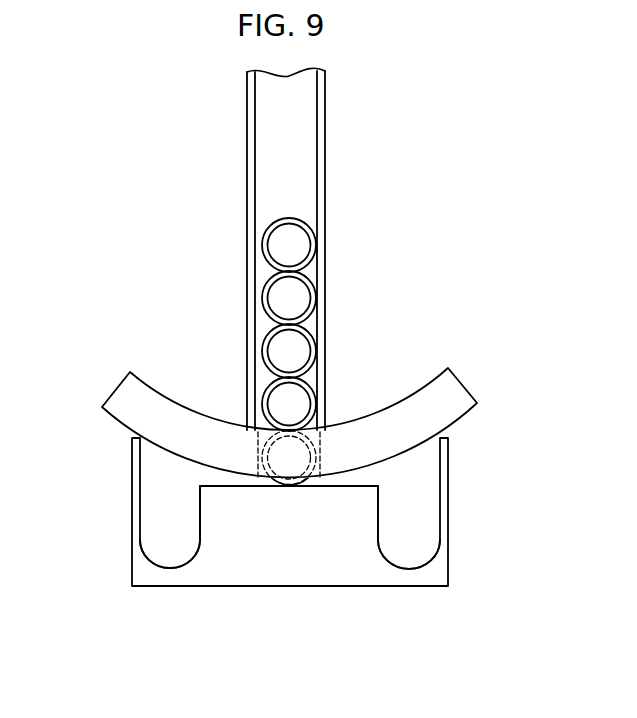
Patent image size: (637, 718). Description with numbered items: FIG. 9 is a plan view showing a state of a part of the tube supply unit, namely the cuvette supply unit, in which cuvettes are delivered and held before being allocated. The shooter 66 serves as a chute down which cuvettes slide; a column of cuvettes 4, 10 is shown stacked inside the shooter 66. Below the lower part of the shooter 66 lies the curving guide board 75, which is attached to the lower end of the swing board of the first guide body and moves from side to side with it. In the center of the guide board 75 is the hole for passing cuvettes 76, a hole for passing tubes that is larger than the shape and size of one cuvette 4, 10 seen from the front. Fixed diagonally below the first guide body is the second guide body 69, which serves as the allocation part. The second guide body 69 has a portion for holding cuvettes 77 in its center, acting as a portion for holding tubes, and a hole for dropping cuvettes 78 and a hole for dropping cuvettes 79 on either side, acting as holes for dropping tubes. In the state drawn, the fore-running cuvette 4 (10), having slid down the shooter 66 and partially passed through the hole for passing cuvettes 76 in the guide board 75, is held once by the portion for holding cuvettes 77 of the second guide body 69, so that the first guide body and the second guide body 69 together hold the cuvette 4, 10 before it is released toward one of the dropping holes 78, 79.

The shooter 66 is at (326, 181).
The cuvette 4 is at (258, 348).
The cuvette 10 is at (231, 427).
The curving guide board 75 is at (452, 392).
The hole for passing cuvettes 76 is at (258, 443).
The portion for holding cuvettes 77 is at (345, 484).
The hole for dropping cuvettes 78 is at (140, 543).
The hole for dropping cuvettes 79 is at (410, 563).
The second guide body 69 is at (172, 578).